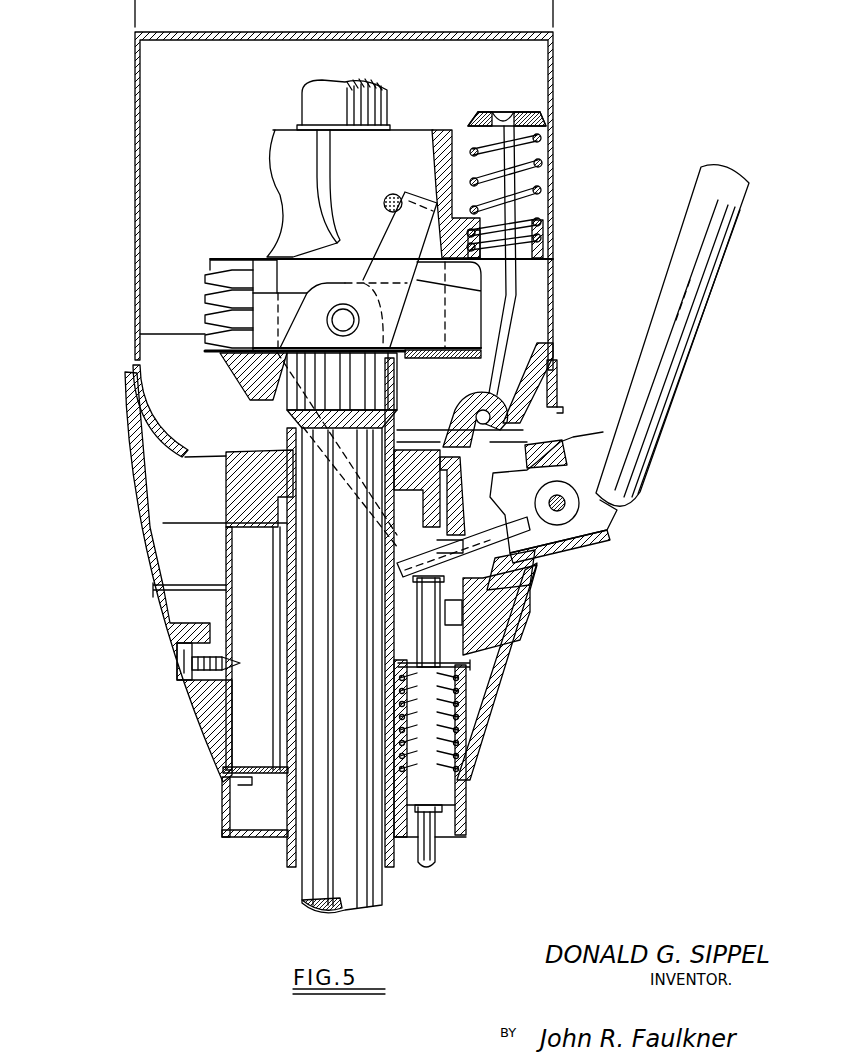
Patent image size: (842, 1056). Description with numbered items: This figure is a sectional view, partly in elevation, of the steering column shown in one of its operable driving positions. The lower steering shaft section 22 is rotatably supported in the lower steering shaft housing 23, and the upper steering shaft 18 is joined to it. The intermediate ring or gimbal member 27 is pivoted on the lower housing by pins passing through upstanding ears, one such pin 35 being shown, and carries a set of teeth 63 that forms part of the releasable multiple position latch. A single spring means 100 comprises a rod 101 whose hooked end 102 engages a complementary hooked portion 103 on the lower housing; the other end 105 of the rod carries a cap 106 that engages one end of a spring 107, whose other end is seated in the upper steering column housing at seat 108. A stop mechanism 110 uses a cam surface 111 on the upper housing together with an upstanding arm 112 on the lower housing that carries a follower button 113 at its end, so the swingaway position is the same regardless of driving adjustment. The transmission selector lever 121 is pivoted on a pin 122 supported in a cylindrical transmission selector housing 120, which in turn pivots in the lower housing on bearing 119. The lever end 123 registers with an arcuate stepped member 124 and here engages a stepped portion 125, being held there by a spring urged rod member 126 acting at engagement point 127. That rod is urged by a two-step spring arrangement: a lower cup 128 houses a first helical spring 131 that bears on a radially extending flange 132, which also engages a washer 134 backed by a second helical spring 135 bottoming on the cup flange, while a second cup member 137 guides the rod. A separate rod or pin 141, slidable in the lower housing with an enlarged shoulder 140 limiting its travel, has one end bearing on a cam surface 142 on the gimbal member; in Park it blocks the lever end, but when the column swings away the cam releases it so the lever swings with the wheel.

The upper steering shaft 18 is at (330, 95).
The lower steering shaft section 22 is at (313, 887).
The lower steering shaft housing 23 is at (248, 457).
The intermediate ring or gimbal member 27 is at (262, 277).
The pin 35 is at (347, 324).
The set of teeth 63 is at (205, 320).
The single spring means 100 is at (568, 143).
The rod 101 is at (509, 215).
The hooked end 102 is at (557, 406).
The hooked portion 103 is at (470, 404).
The other end of the rod 105 is at (513, 112).
The cap 106 is at (481, 112).
The spring 107 is at (538, 192).
The spring seat 108 is at (534, 236).
The stop mechanism 110 is at (353, 212).
The cam surface 111 is at (327, 180).
The upstanding arm 112 is at (388, 277).
The follower button 113 is at (386, 206).
The bearing 119 is at (308, 612).
The transmission selector housing 120 is at (603, 549).
The transmission selector lever 121 is at (663, 338).
The pin 122 is at (566, 507).
The end of the transmission selector lever 123 is at (528, 553).
The arcuate stepped member 124 is at (458, 483).
The stepped portion 125 is at (466, 533).
The spring urged rod member 126 is at (432, 846).
The engagement point 127 is at (520, 588).
The lower cup 128 is at (458, 792).
The first helical spring 131 is at (463, 702).
The radially extending flange 132 is at (442, 657).
The washer 134 is at (470, 668).
The second helical spring 135 is at (455, 732).
The second cup member 137 is at (488, 622).
The enlarged shoulder 140 is at (295, 417).
The rod or pin 141 is at (228, 477).
The cam surface 142 is at (268, 380).